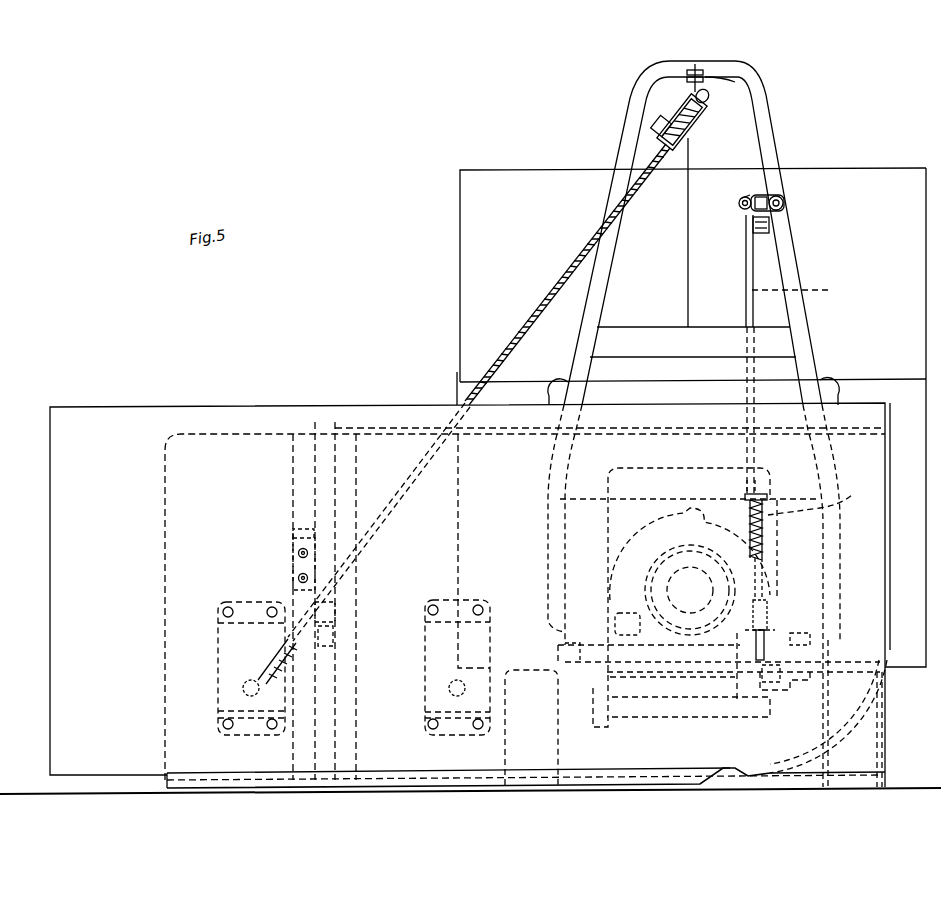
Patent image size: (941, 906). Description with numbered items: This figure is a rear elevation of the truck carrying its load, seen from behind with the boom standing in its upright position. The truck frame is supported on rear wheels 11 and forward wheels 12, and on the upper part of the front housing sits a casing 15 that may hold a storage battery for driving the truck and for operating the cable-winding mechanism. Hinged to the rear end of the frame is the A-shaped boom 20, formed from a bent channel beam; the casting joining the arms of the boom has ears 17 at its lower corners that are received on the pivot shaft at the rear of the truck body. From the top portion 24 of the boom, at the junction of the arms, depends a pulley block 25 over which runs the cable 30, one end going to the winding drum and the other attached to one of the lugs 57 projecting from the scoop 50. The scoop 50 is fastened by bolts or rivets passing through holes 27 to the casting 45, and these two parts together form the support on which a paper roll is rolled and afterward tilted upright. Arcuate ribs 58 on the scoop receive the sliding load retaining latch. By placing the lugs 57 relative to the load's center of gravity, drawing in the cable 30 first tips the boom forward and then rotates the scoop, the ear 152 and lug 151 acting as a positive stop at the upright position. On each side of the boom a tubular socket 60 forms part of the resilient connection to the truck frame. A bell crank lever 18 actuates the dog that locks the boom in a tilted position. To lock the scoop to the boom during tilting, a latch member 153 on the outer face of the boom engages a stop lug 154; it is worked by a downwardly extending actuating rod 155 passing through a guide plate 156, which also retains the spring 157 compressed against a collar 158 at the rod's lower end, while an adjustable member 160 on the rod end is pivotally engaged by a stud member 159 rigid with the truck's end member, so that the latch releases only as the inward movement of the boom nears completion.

The rear wheels 11 is at (556, 745).
The forward wheels 12 is at (800, 645).
The casing 15 is at (816, 271).
The ears 17 is at (585, 672).
The bell crank lever 18 is at (548, 553).
The boom 20 is at (793, 252).
The top portion of the boom 24 is at (722, 78).
The pulley block 25 is at (700, 119).
The holes 27 is at (755, 300).
The cable 30 is at (690, 206).
The casting 45 is at (772, 535).
The scoop 50 is at (450, 780).
The lugs 57 is at (245, 692).
The arcuate ribs 58 is at (296, 752).
The tubular sockets 60 is at (557, 382).
The lug 151 is at (765, 213).
The ear 152 is at (293, 556).
The latch member 153 is at (754, 198).
The stop lug 154 is at (293, 538).
The actuating rod 155 is at (823, 290).
The guide plate 156 is at (762, 494).
The spring 157 is at (823, 495).
The collar 158 is at (780, 562).
The stud member 159 is at (785, 657).
The adjustable member 160 is at (765, 617).